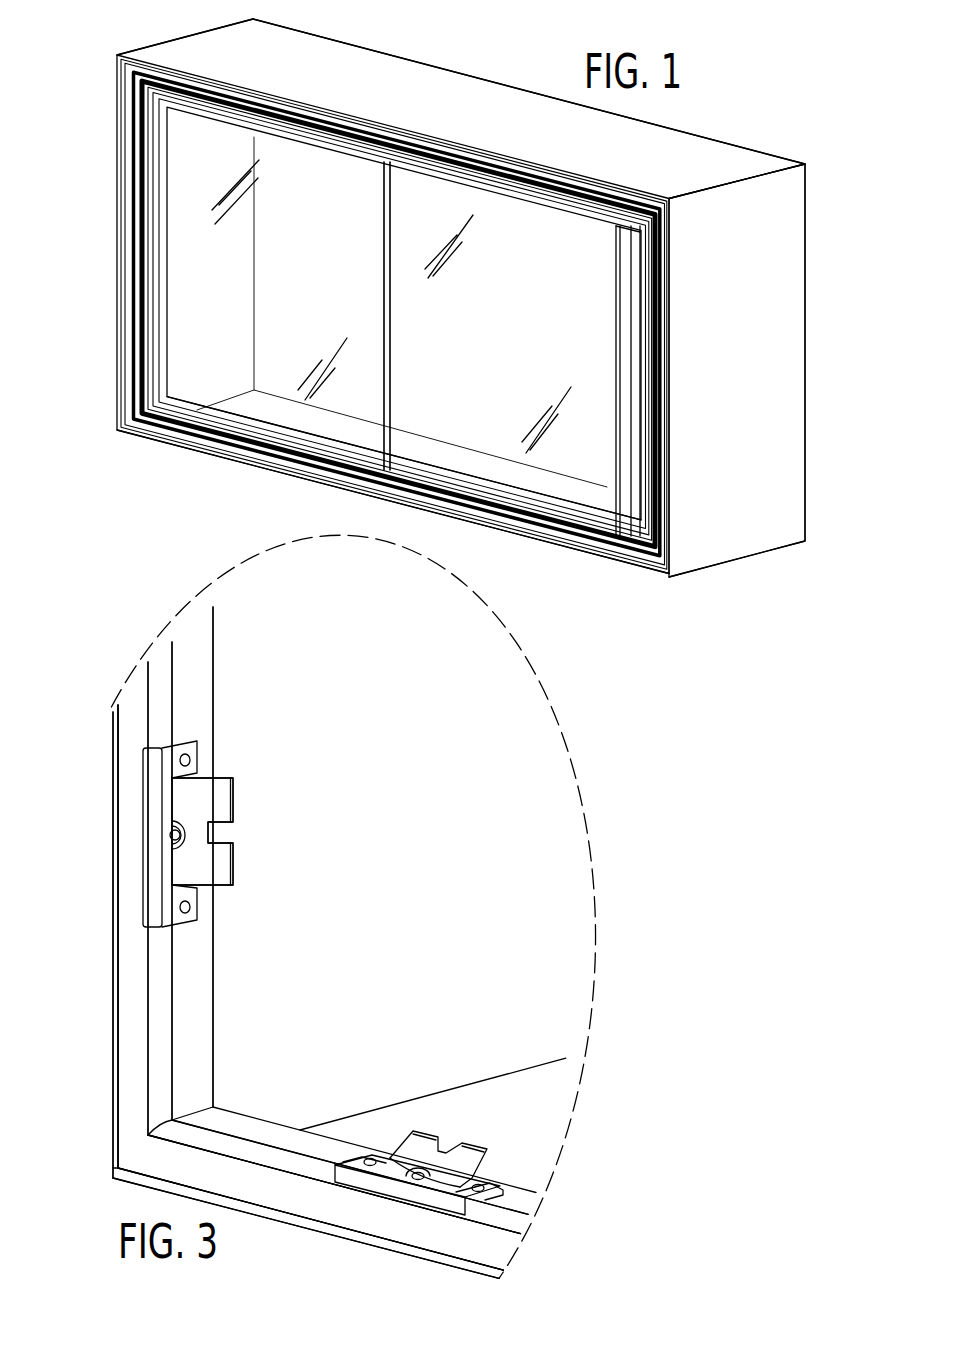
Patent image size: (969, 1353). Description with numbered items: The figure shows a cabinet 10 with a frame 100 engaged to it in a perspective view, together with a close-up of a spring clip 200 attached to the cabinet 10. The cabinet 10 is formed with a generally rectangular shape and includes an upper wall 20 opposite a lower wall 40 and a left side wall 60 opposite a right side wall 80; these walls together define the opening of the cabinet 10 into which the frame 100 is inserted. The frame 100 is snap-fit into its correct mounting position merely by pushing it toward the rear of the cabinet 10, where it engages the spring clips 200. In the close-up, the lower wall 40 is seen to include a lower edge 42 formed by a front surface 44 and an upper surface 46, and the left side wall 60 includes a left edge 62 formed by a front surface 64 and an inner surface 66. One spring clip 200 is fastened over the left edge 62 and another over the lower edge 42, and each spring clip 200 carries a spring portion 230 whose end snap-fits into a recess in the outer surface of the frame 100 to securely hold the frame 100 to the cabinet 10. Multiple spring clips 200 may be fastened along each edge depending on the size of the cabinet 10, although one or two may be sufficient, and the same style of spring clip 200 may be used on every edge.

In FIG. 1, the cabinet 10 is at (760, 333).
In FIG. 3, the cabinet 10 is at (455, 830).
In FIG. 1, the upper wall 20 is at (425, 92).
In FIG. 1, the lower wall 40 is at (393, 505).
In FIG. 3, the lower wall 40 is at (535, 1095).
In FIG. 3, the lower edge 42 is at (300, 1153).
In FIG. 3, the front surface 44 is at (280, 1160).
In FIG. 3, the upper surface 46 is at (228, 1120).
In FIG. 1, the left side wall 60 is at (117, 165).
In FIG. 3, the left side wall 60 is at (287, 672).
In FIG. 3, the left edge 62 is at (170, 1097).
In FIG. 3, the front surface 64 is at (158, 973).
In FIG. 3, the inner surface 66 is at (190, 1038).
In FIG. 1, the right side wall 80 is at (767, 430).
In FIG. 1, the frame 100 is at (550, 532).
In FIG. 3, the spring clip 200 is at (152, 870).
In FIG. 3, the spring portion 230 is at (205, 812).